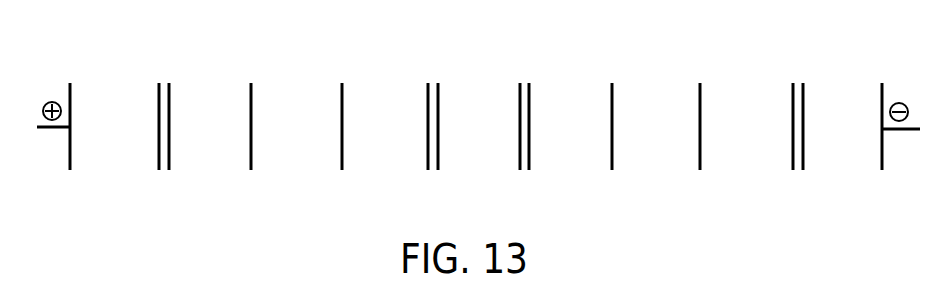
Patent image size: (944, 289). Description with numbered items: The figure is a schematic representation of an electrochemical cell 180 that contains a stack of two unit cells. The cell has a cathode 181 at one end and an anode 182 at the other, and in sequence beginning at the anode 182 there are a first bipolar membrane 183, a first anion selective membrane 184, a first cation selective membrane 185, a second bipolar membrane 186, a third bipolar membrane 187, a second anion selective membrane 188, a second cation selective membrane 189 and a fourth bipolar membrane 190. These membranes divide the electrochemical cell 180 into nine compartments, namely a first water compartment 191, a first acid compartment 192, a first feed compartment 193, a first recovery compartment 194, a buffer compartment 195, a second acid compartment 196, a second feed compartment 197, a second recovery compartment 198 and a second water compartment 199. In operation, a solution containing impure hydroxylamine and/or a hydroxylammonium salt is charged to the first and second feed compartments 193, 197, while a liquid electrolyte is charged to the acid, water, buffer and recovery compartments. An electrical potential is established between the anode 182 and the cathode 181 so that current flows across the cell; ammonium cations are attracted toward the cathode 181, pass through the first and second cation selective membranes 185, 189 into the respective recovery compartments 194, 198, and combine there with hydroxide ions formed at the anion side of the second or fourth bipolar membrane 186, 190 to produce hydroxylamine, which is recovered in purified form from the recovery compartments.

The electrochemical cell 180 is at (478, 106).
The cathode 181 is at (893, 113).
The anode 182 is at (67, 113).
The first bipolar membrane 183 is at (167, 130).
The first anion selective membrane 184 is at (254, 130).
The first cation selective membrane 185 is at (341, 130).
The second bipolar membrane 186 is at (437, 130).
The third bipolar membrane 187 is at (526, 130).
The second anion selective membrane 188 is at (613, 130).
The second cation selective membrane 189 is at (705, 130).
The fourth bipolar membrane 190 is at (802, 130).
The first water compartment 191 is at (113, 163).
The first acid compartment 192 is at (209, 163).
The first feed compartment 193 is at (299, 163).
The first recovery compartment 194 is at (389, 163).
The buffer compartment 195 is at (482, 163).
The second acid compartment 196 is at (573, 163).
The second feed compartment 197 is at (658, 163).
The second recovery compartment 198 is at (750, 163).
The second water compartment 199 is at (846, 163).